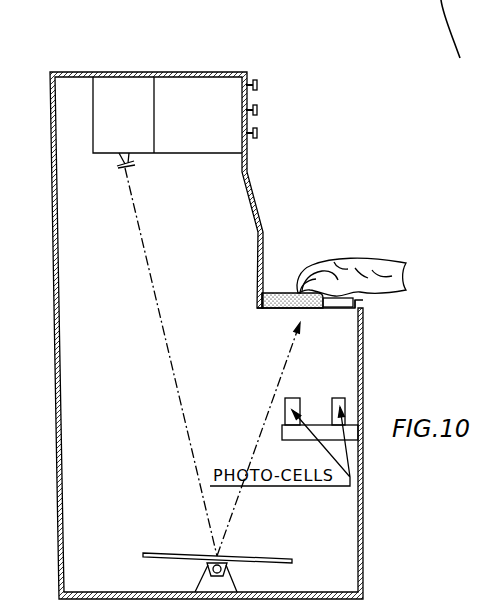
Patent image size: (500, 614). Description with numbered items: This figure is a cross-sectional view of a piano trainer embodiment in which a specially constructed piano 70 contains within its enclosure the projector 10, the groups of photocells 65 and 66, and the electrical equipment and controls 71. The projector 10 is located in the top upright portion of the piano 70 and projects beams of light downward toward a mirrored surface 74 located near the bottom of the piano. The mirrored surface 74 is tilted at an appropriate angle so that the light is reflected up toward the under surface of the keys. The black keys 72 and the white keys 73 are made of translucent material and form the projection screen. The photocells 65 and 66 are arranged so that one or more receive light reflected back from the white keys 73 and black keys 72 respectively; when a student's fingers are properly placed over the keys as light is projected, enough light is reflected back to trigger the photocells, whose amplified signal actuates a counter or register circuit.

The projector 10 is at (147, 49).
The electrical equipment and controls 71 is at (207, 95).
The piano 70 is at (256, 200).
The black keys 72 is at (273, 293).
The white keys 73 is at (343, 302).
The photocells 66 is at (293, 398).
The photocells 65 is at (342, 392).
The mirrored surface 74 is at (222, 556).